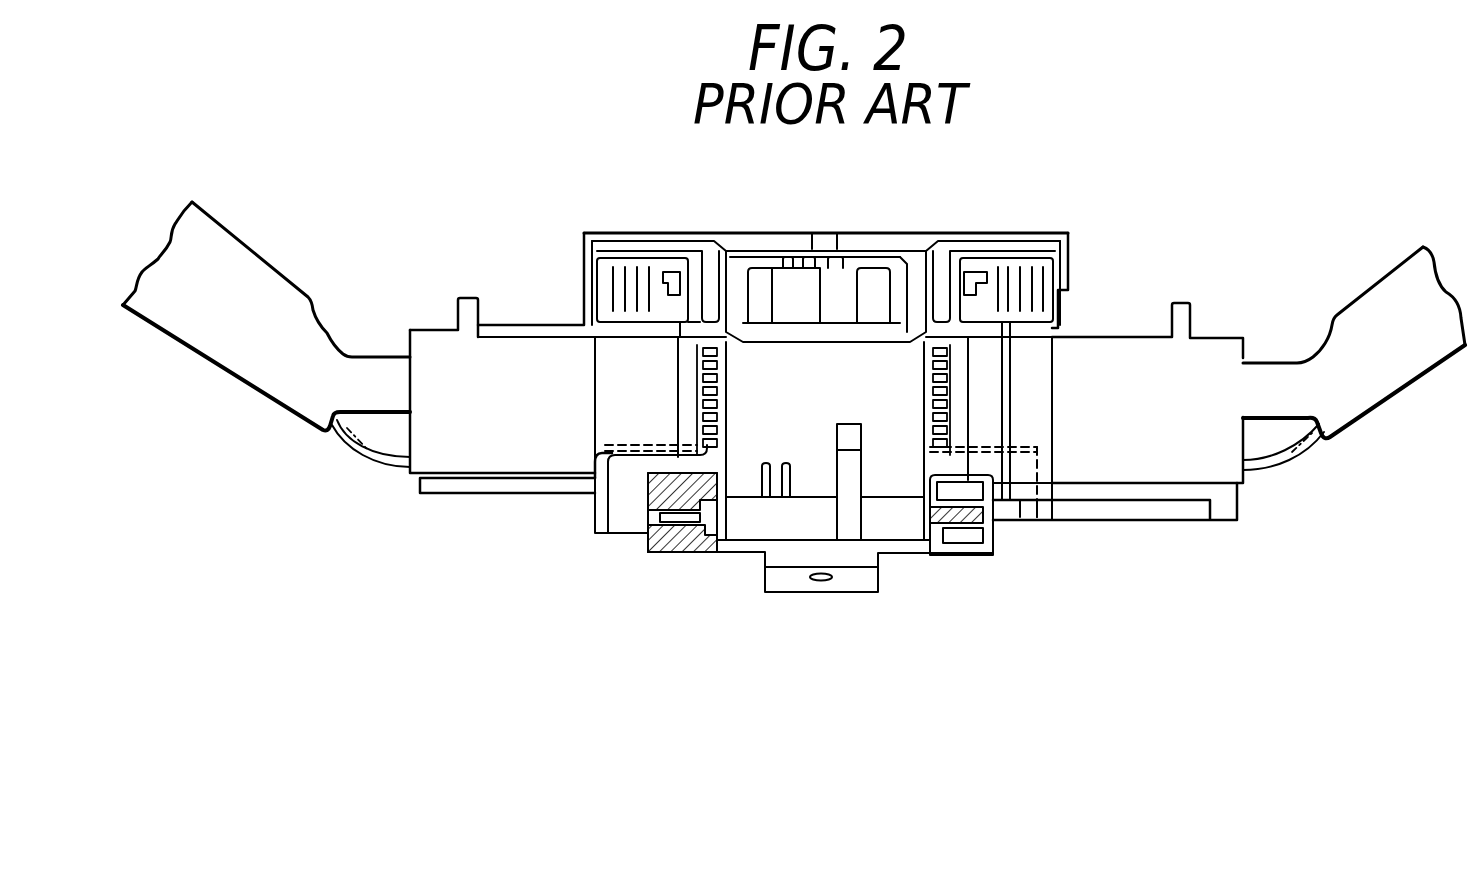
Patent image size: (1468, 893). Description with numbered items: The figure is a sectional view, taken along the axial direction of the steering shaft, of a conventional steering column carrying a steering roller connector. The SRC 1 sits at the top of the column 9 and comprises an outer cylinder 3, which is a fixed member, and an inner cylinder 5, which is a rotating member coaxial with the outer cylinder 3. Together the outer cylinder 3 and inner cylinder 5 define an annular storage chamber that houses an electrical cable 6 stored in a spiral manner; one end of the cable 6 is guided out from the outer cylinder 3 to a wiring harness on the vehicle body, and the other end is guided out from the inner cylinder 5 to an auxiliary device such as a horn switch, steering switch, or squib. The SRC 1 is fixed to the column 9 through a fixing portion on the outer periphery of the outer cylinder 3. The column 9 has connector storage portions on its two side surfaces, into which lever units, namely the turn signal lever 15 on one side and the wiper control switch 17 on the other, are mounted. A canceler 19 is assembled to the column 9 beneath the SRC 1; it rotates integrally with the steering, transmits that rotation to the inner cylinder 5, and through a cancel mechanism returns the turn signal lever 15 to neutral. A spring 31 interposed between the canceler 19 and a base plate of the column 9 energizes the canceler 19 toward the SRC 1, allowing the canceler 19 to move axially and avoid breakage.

The SRC 1 is at (1004, 222).
The outer cylinder 3 is at (1062, 312).
The inner cylinder 5 is at (722, 236).
The electrical cable 6 is at (628, 278).
The column 9 is at (1212, 530).
The turn signal lever 15 is at (1386, 413).
The wiper control switch 17 is at (252, 392).
The canceler 19 is at (798, 498).
The spring 31 is at (712, 385).